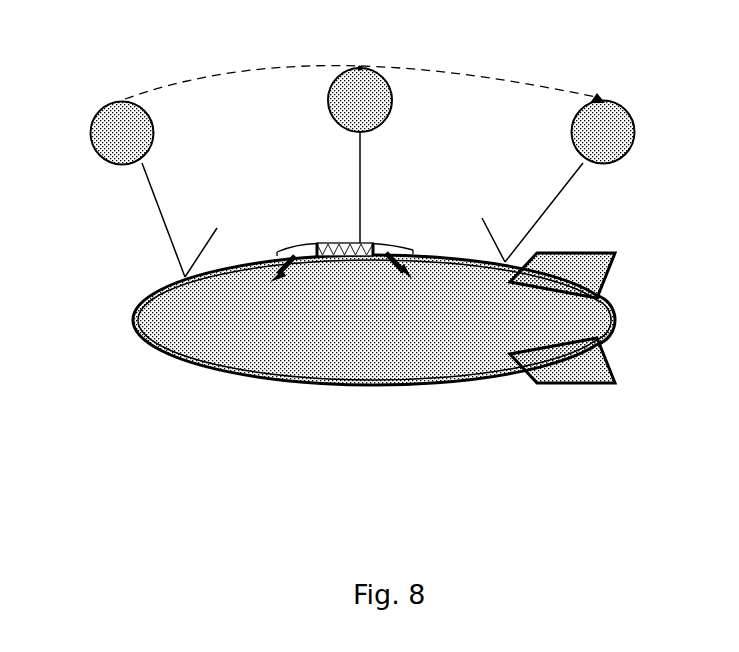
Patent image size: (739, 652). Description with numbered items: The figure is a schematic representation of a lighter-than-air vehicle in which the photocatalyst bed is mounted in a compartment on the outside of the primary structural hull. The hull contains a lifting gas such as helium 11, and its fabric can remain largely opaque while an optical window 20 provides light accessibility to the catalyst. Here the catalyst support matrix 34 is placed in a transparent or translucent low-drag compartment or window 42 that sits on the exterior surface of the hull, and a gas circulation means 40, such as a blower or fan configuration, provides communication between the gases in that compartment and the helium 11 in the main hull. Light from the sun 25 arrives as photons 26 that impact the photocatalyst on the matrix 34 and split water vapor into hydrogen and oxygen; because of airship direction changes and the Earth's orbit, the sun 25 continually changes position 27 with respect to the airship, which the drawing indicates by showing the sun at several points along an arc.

The helium 11 is at (362, 342).
The optical window 20 is at (449, 251).
The sun 25 is at (131, 127).
The photons 26 is at (349, 165).
The position 27 is at (464, 75).
The catalyst support matrix 34 is at (400, 243).
The gas circulation means 40 is at (270, 283).
The low-drag compartment or window 42 is at (283, 246).